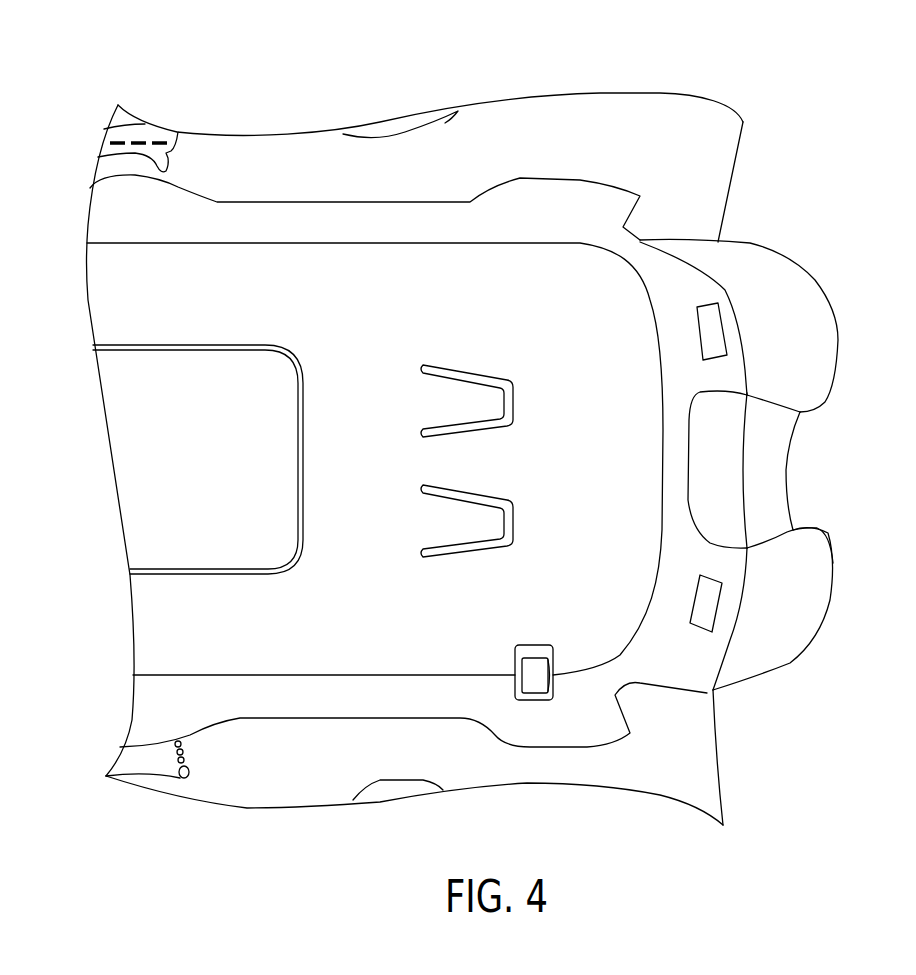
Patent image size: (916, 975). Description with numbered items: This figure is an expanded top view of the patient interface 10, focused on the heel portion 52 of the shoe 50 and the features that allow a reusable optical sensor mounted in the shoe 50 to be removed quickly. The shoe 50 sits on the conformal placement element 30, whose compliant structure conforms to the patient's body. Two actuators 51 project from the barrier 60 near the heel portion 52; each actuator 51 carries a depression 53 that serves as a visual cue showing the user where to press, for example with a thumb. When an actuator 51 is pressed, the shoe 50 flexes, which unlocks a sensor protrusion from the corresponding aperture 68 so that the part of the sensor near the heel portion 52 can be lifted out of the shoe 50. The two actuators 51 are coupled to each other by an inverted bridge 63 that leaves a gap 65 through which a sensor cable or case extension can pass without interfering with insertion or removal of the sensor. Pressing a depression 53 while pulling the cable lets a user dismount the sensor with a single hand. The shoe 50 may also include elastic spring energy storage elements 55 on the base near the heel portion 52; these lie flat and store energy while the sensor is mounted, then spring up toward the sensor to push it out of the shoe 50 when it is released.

The patient interface 10 is at (835, 87).
The conformal placement element 30 is at (750, 166).
The shoe 50 is at (392, 192).
The actuator 51 is at (782, 265).
The heel portion 52 is at (637, 687).
The depression 53 is at (790, 342).
The elastic spring energy storage element 55 is at (440, 408).
The barrier 60 is at (560, 713).
The inverted bridge 63 is at (773, 505).
The gap 65 is at (710, 472).
The aperture 68 is at (693, 602).